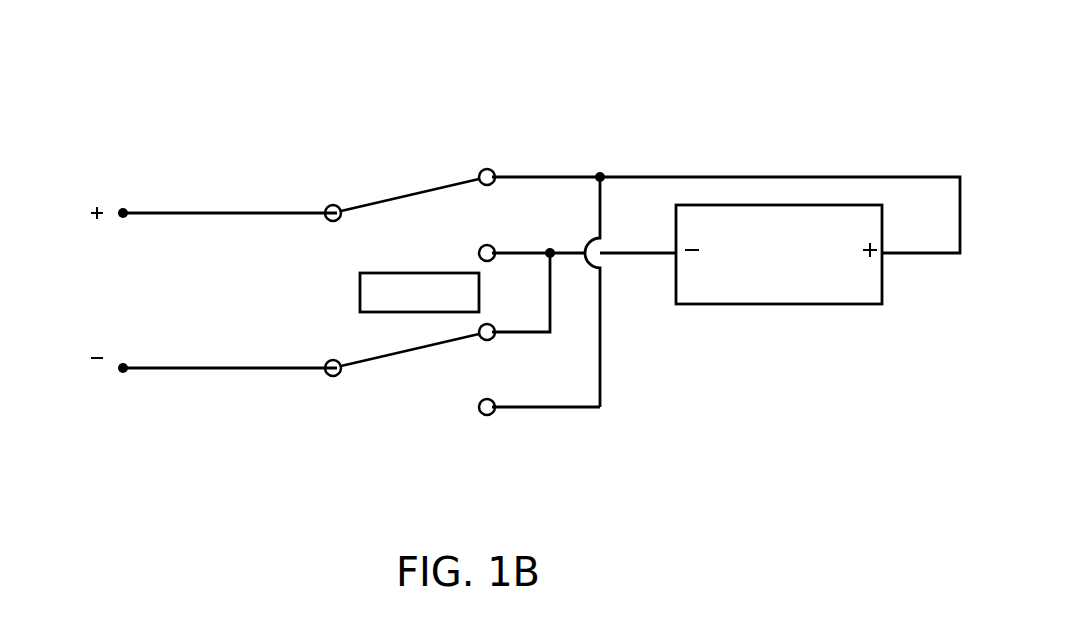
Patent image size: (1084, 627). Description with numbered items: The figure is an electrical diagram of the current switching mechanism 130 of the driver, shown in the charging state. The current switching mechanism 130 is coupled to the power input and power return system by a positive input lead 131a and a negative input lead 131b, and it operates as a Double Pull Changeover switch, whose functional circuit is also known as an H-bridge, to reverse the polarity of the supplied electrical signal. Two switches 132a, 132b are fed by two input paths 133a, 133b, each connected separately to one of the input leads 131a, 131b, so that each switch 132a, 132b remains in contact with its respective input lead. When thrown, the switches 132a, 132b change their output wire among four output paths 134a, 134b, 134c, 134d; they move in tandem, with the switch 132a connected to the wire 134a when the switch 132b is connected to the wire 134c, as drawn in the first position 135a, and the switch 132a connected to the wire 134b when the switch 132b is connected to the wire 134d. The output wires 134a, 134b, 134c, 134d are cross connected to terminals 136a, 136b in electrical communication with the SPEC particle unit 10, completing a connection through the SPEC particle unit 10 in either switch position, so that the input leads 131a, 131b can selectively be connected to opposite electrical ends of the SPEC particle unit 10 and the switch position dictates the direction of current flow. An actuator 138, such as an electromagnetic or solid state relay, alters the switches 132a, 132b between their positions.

The current switching mechanism 130 is at (258, 66).
The first position 135a is at (432, 146).
The positive input lead 131a is at (122, 207).
The negative input lead 131b is at (123, 372).
The first input path 133a is at (213, 216).
The second input path 133b is at (200, 366).
The first switch 132a is at (413, 192).
The second switch 132b is at (412, 352).
The first output path 134a is at (507, 172).
The second output path 134b is at (500, 246).
The third output path 134c is at (515, 337).
The fourth output path 134d is at (533, 411).
The first terminal 136a is at (594, 173).
The second terminal 136b is at (544, 249).
The SPEC particle unit 10 is at (779, 254).
The actuator 138 is at (419, 292).